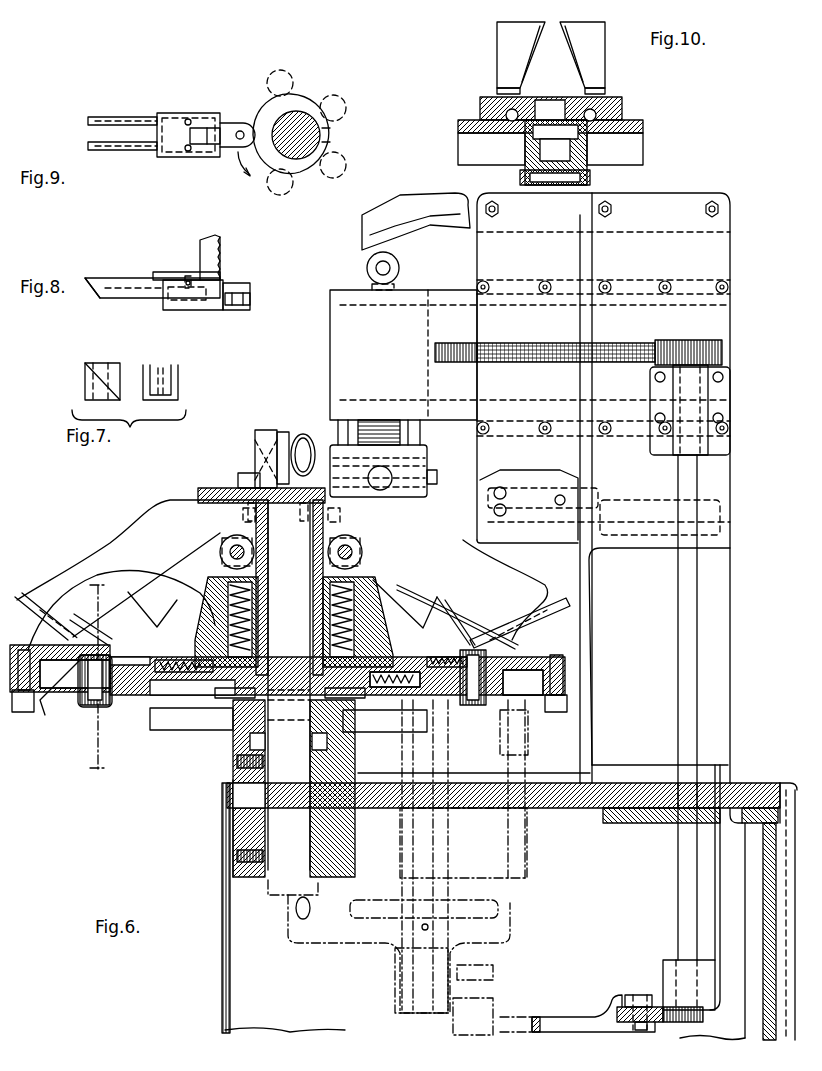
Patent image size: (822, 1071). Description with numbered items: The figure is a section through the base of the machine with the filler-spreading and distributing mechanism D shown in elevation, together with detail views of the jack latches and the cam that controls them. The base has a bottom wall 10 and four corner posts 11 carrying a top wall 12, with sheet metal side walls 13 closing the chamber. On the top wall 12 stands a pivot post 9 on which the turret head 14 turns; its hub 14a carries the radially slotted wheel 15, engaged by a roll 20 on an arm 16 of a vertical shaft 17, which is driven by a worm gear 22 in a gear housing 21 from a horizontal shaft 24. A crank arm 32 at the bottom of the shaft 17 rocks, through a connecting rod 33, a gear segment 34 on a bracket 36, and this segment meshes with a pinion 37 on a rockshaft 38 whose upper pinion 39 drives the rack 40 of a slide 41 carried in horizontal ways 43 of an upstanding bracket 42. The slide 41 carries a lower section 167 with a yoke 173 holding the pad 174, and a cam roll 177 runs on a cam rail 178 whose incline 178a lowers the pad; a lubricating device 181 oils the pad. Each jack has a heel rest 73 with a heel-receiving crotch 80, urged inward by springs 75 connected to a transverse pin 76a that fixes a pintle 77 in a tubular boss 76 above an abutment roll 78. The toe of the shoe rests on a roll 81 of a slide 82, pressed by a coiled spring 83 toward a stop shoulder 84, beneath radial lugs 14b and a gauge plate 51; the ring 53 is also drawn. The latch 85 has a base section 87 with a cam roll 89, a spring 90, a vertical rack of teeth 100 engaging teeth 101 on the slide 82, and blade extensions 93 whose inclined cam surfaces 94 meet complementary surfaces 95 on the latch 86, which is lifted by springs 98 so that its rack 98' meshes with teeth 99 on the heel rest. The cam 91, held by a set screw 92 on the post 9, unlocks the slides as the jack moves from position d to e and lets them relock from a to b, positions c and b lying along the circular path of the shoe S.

In FIG. 9, the pivot post 9 is at (320, 100).
In FIG. 6, the pivot post 9 is at (289, 685).
In FIG. 9, the cam 91 is at (303, 120).
In FIG. 6, the cam 91 is at (262, 690).
In FIG. 9, the set screw 92 is at (330, 135).
In FIG. 9, the blade extensions 93 is at (88, 120).
In FIG. 8, the blade extensions 93 is at (115, 278).
In FIG. 10, the blade extensions 93 is at (550, 149).
In FIG. 9, the latch 85 is at (200, 126).
In FIG. 8, the latch 85 is at (195, 272).
In FIG. 6, the latch 85 is at (200, 640).
In FIG. 9, the cam roll 89 is at (241, 124).
In FIG. 8, the cam roll 89 is at (252, 298).
In FIG. 6, the cam roll 89 is at (330, 692).
In FIG. 8, the base section 87 is at (212, 306).
In FIG. 8, the vertical rack of teeth 100 is at (222, 250).
In FIG. 8, the inclined cam surfaces 94 is at (90, 283).
In FIG. 7, the complementary cam surfaces 95 is at (177, 365).
In FIG. 7, the radially disposed rack of teeth 98' is at (122, 366).
In FIG. 7, the latch 86 is at (85, 386).
In FIG. 10, the latch 86 is at (590, 178).
In FIG. 6, the latch 86 is at (95, 655).
In FIG. 10, the heel-receiving crotch 80 is at (540, 36).
In FIG. 6, the heel-receiving crotch 80 is at (30, 570).
In FIG. 10, the heel rest 73 is at (548, 100).
In FIG. 6, the heel rest 73 is at (150, 652).
In FIG. 10, the springs 75 is at (482, 108).
In FIG. 10, the radial rack of teeth 99 is at (565, 100).
In FIG. 6, the radial rack of teeth 99 is at (75, 690).
In FIG. 10, the turret head 14 is at (643, 153).
In FIG. 6, the turret head 14 is at (145, 700).
In FIG. 6, the cam rail 178 is at (448, 195).
In FIG. 6, the incline 178a is at (410, 236).
In FIG. 6, the cam roll 177 is at (400, 262).
In FIG. 6, the horizontal ways 43 is at (512, 288).
In FIG. 6, the slide 41 is at (403, 355).
In FIG. 6, the rack 40 is at (462, 345).
In FIG. 6, the pinion 39 is at (684, 350).
In FIG. 6, the lower section 167 is at (390, 435).
In FIG. 6, the yoke 173 is at (428, 460).
In FIG. 6, the shoe or pad 174 is at (437, 480).
In FIG. 6, the lubricating device 181 is at (567, 476).
In FIG. 6, the ring 53 is at (298, 438).
In FIG. 6, the gauge plate 51 is at (228, 490).
In FIG. 6, the radial lugs 14b is at (370, 515).
In FIG. 6, the slide 82 is at (185, 565).
In FIG. 6, the stop shoulder 84 is at (225, 598).
In FIG. 6, the roll 81 is at (220, 550).
In FIG. 6, the vertical rack of teeth 101 is at (210, 622).
In FIG. 6, the hub 14a is at (365, 590).
In FIG. 6, the sheet S is at (135, 510).
In FIG. 6, the position a is at (20, 580).
In FIG. 9, the position d is at (340, 105).
In FIG. 6, the position d is at (562, 580).
In FIG. 6, the mechanism D is at (758, 228).
In FIG. 9, the position e is at (280, 72).
In FIG. 9, the position c is at (336, 170).
In FIG. 9, the position b is at (280, 192).
In FIG. 6, the transverse pin 76a is at (598, 615).
In FIG. 6, the bottom wall 10 is at (97, 673).
In FIG. 6, the coiled spring 83 is at (335, 612).
In FIG. 6, the pintle 77 is at (25, 655).
In FIG. 6, the tubular boss 76 is at (60, 688).
In FIG. 6, the abutment roll 78 is at (24, 712).
In FIG. 6, the springs 98 is at (107, 703).
In FIG. 6, the spring 90 is at (188, 708).
In FIG. 6, the radially slotted wheel 15 is at (200, 732).
In FIG. 6, the roll 20 is at (235, 749).
In FIG. 6, the arm 16 is at (528, 740).
In FIG. 6, the upstanding bracket 42 is at (544, 488).
In FIG. 6, the rockshaft 38 is at (705, 684).
In FIG. 6, the top wall 12 is at (582, 800).
In FIG. 6, the vertical shaft 17 is at (438, 838).
In FIG. 6, the horizontal shaft 24 is at (296, 909).
In FIG. 6, the worm gear 22 is at (498, 909).
In FIG. 6, the gear housing 21 is at (318, 945).
In FIG. 6, the crank arm 32 is at (500, 988).
In FIG. 6, the connecting rod 33 is at (555, 1017).
In FIG. 6, the gear segment 34 is at (636, 1007).
In FIG. 6, the bracket 36 is at (675, 960).
In FIG. 6, the pinion 37 is at (703, 1015).
In FIG. 6, the side walls 13 is at (228, 1033).
In FIG. 6, the corner posts 11 is at (770, 1033).